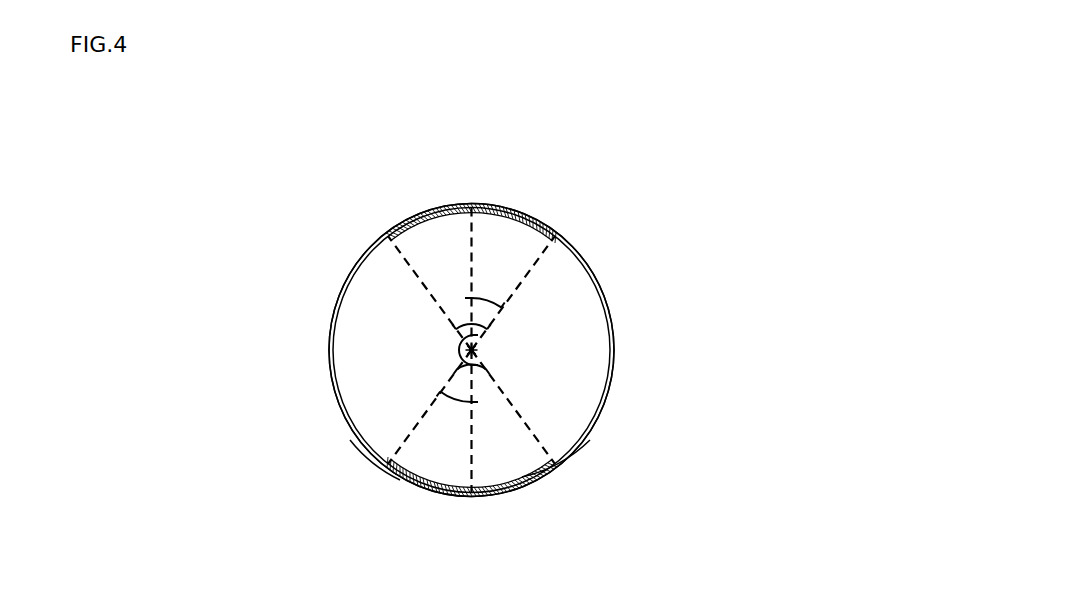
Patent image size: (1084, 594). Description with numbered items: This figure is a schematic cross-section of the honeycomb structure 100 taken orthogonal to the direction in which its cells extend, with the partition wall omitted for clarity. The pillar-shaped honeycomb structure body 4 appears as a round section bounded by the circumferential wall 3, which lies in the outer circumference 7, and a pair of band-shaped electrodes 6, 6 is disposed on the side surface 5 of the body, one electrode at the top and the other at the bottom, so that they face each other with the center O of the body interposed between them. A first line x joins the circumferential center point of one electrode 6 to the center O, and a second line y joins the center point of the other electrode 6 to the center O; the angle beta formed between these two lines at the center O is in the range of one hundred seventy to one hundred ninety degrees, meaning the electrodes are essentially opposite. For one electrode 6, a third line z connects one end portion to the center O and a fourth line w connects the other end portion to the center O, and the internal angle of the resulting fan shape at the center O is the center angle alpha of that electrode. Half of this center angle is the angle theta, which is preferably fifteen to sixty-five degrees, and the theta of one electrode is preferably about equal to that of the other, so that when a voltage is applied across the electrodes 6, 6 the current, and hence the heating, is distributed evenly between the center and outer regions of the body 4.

The honeycomb structure 100 is at (803, 119).
The circumferential wall 3 is at (570, 460).
The honeycomb structure body 4 is at (616, 343).
The side surface 5 is at (367, 450).
The electrode 6 is at (502, 201).
The outer circumference 7 is at (614, 378).
The center O is at (476, 350).
The first line x is at (470, 253).
The second line y is at (473, 440).
The third line z is at (405, 262).
The fourth line w is at (542, 260).
The center angle alpha is at (465, 323).
The angle formed by the first line and the second line beta is at (457, 348).
The angle that is 0.5 times the center angle theta is at (492, 298).